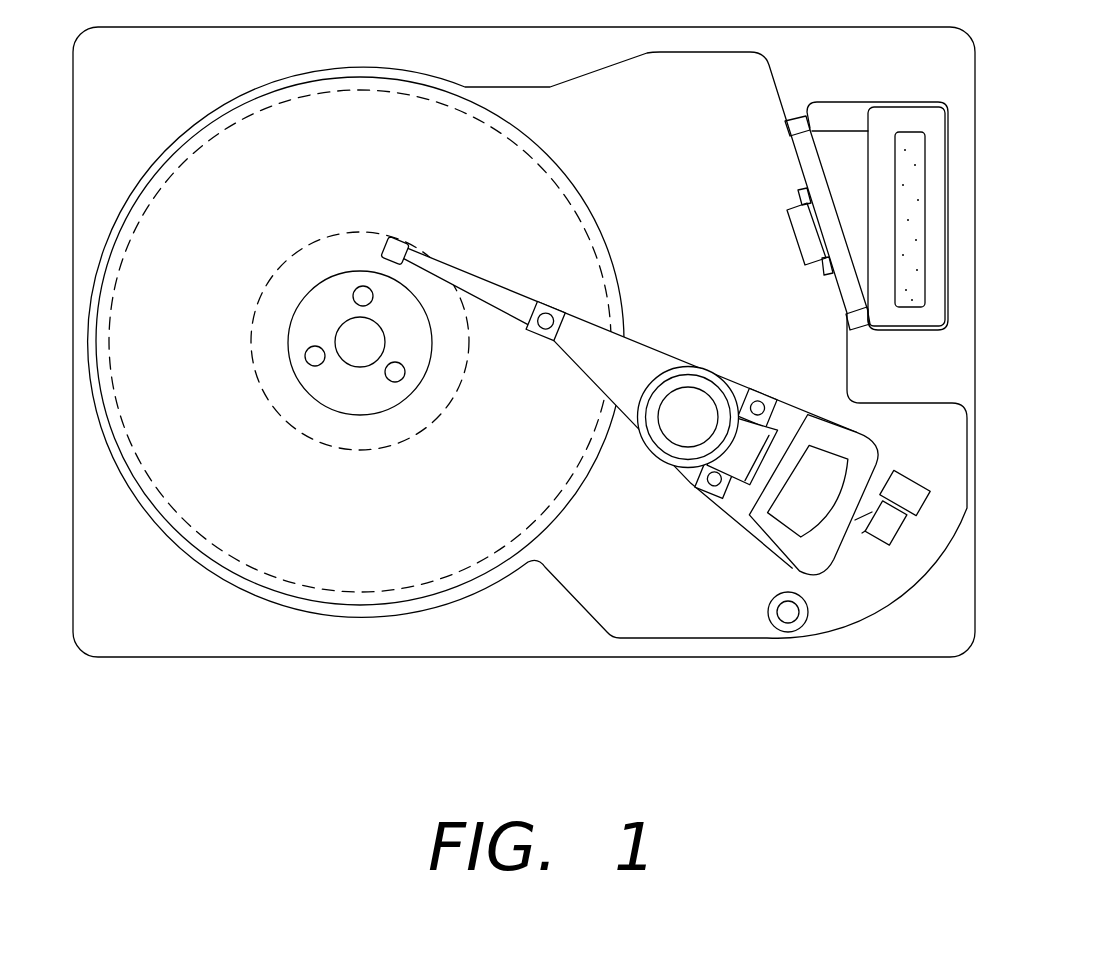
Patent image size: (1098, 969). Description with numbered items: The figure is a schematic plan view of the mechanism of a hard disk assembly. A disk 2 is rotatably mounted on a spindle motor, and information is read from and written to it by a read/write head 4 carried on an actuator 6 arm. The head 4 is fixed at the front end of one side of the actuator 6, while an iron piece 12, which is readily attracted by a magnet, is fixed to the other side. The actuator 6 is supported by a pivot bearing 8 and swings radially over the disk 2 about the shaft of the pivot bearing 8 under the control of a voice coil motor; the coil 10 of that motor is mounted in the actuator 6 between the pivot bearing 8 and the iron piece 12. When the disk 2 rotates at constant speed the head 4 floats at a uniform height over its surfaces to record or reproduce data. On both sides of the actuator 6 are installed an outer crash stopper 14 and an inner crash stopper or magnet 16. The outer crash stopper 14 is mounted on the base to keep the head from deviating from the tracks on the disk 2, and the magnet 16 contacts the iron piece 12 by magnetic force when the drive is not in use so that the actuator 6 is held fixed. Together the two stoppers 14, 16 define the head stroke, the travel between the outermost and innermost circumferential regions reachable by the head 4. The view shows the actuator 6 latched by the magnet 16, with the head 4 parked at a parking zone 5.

The disk 2 is at (312, 574).
The read/write head 4 is at (396, 246).
The parking zone 5 is at (268, 393).
The actuator 6 is at (640, 327).
The pivot bearing 8 is at (690, 403).
The coil 10 is at (808, 426).
The iron piece 12 is at (890, 527).
The outer crash stopper 14 is at (787, 622).
The inner crash stopper (magnet) 16 is at (908, 487).